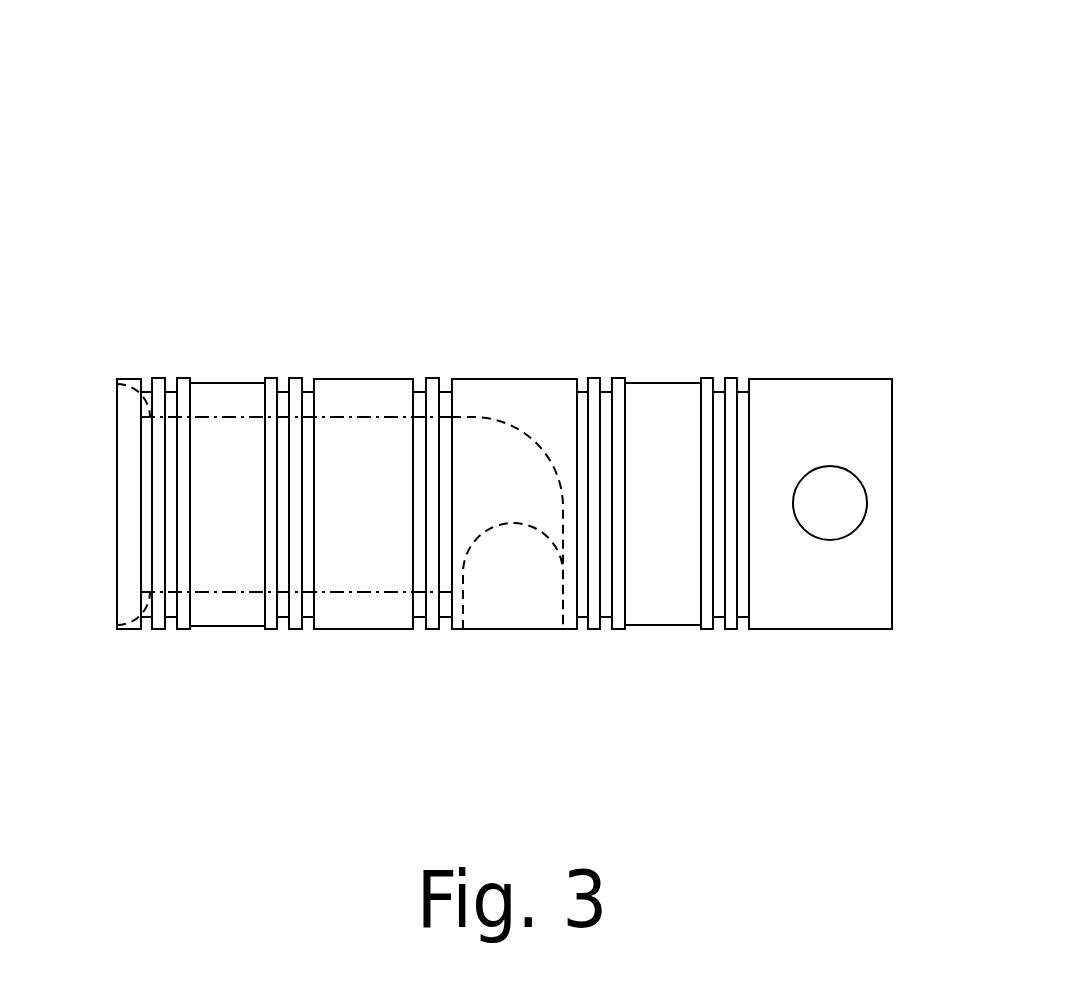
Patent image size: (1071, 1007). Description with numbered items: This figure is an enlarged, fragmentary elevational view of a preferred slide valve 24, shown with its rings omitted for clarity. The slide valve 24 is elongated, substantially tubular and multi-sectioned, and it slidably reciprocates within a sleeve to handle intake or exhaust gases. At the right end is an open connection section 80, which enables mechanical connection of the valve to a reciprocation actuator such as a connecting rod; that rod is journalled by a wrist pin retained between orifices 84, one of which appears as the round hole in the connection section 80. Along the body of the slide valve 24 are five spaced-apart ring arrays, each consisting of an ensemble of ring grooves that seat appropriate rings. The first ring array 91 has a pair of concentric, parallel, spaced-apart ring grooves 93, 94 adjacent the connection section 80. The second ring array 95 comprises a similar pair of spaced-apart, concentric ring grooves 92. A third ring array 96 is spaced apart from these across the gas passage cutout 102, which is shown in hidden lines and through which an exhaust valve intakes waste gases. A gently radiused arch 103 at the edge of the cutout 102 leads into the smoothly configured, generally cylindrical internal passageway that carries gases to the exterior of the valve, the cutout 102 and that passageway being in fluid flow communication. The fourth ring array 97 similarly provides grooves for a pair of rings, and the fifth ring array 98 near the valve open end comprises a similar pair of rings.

The slide valve 24 is at (479, 224).
The open connection section 80 is at (856, 630).
The orifice 84 is at (837, 464).
The first ring array 91 is at (745, 349).
The ring grooves 92 is at (600, 657).
The ring groove 93 is at (754, 651).
The ring groove 94 is at (707, 646).
The second ring array 95 is at (609, 351).
The third ring array 96 is at (414, 600).
The fourth ring array 97 is at (306, 348).
The fifth ring array 98 is at (159, 648).
The gas passage cutout 102 is at (484, 621).
The radiused arch 103 is at (513, 568).